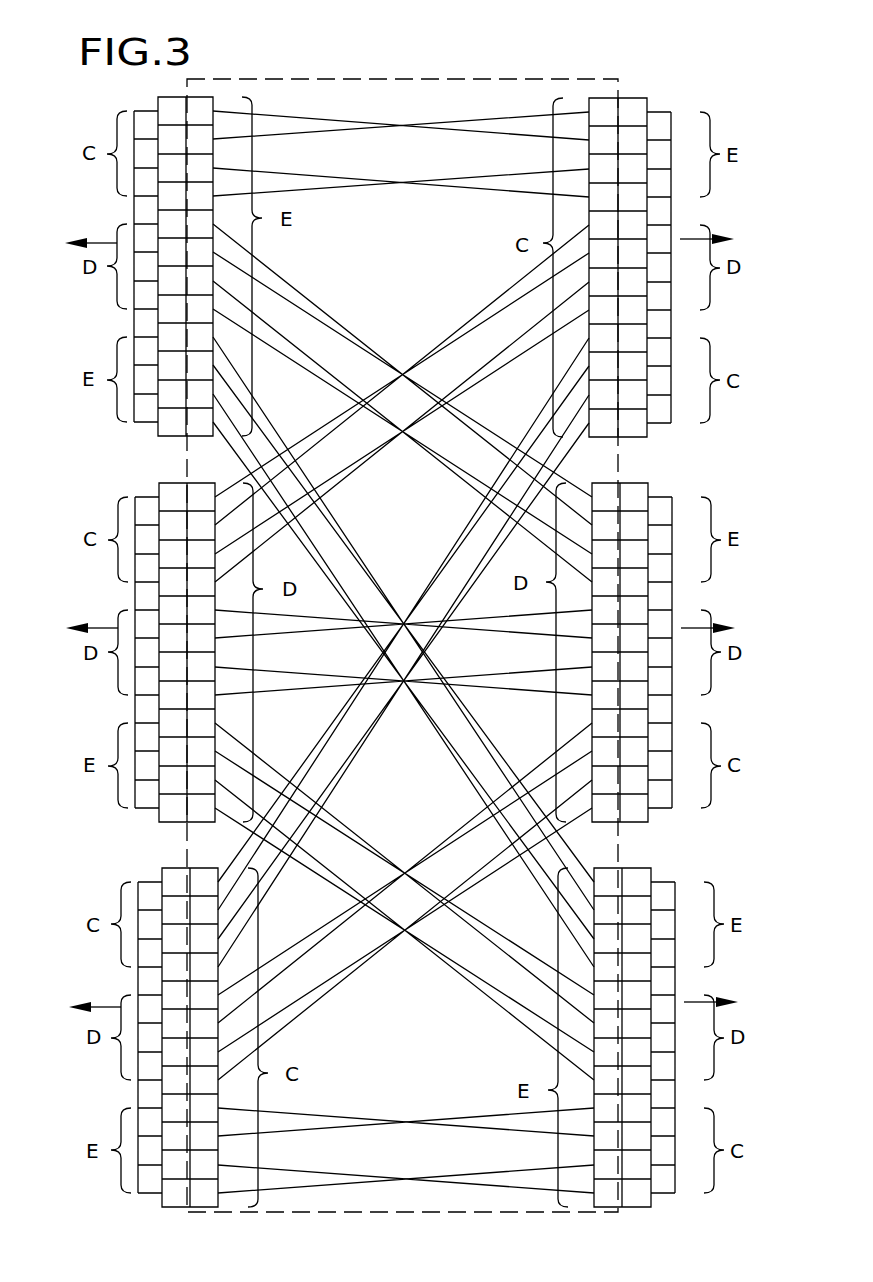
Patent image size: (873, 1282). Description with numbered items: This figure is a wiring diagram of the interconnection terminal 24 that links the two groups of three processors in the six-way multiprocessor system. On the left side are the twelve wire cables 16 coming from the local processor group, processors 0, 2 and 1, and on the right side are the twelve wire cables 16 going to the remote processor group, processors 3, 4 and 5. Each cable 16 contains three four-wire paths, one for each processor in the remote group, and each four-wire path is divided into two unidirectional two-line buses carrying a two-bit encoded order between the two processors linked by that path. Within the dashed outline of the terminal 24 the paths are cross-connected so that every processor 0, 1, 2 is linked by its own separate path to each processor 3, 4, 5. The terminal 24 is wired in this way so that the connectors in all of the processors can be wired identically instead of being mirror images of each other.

The twelve wire cable 16 is at (145, 417).
The interconnection terminal 24 is at (518, 76).
The processor 0 is at (69, 244).
The processor 1 is at (76, 1008).
The processor 2 is at (75, 629).
The processor 3 is at (724, 240).
The processor 4 is at (723, 629).
The processor 5 is at (726, 1003).